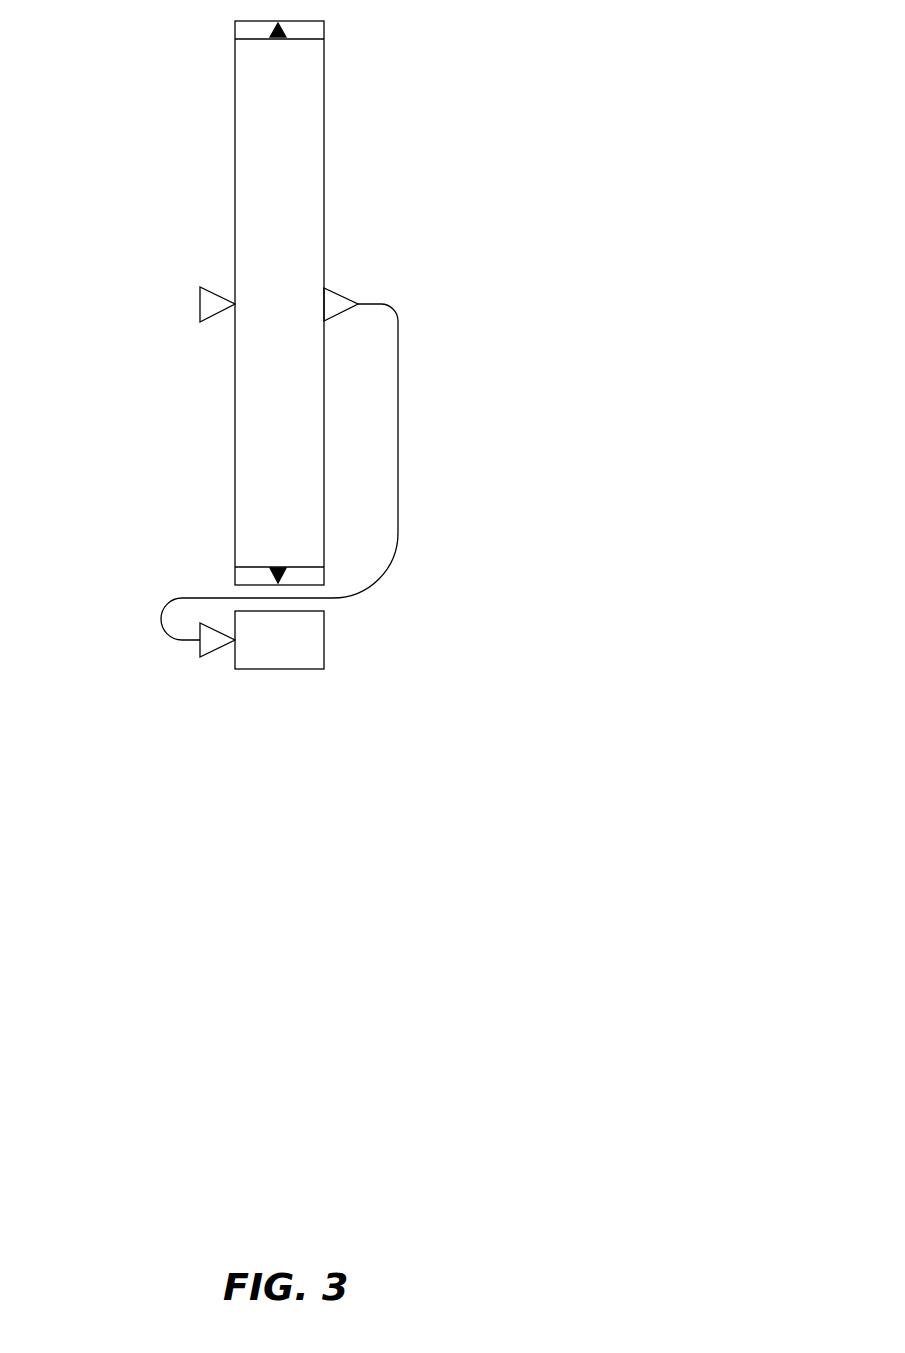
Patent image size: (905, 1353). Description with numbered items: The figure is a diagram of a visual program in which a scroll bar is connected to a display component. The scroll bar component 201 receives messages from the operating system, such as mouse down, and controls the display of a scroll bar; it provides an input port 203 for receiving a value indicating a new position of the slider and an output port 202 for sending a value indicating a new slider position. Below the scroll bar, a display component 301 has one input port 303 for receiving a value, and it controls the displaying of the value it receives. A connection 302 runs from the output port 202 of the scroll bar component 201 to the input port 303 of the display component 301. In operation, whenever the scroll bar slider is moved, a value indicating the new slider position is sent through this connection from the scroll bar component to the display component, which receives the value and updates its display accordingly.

The scroll bar component 201 is at (324, 102).
The output port 202 is at (338, 293).
The input port 203 is at (199, 301).
The display component 301 is at (324, 640).
The connection 302 is at (398, 425).
The input port 303 is at (222, 645).